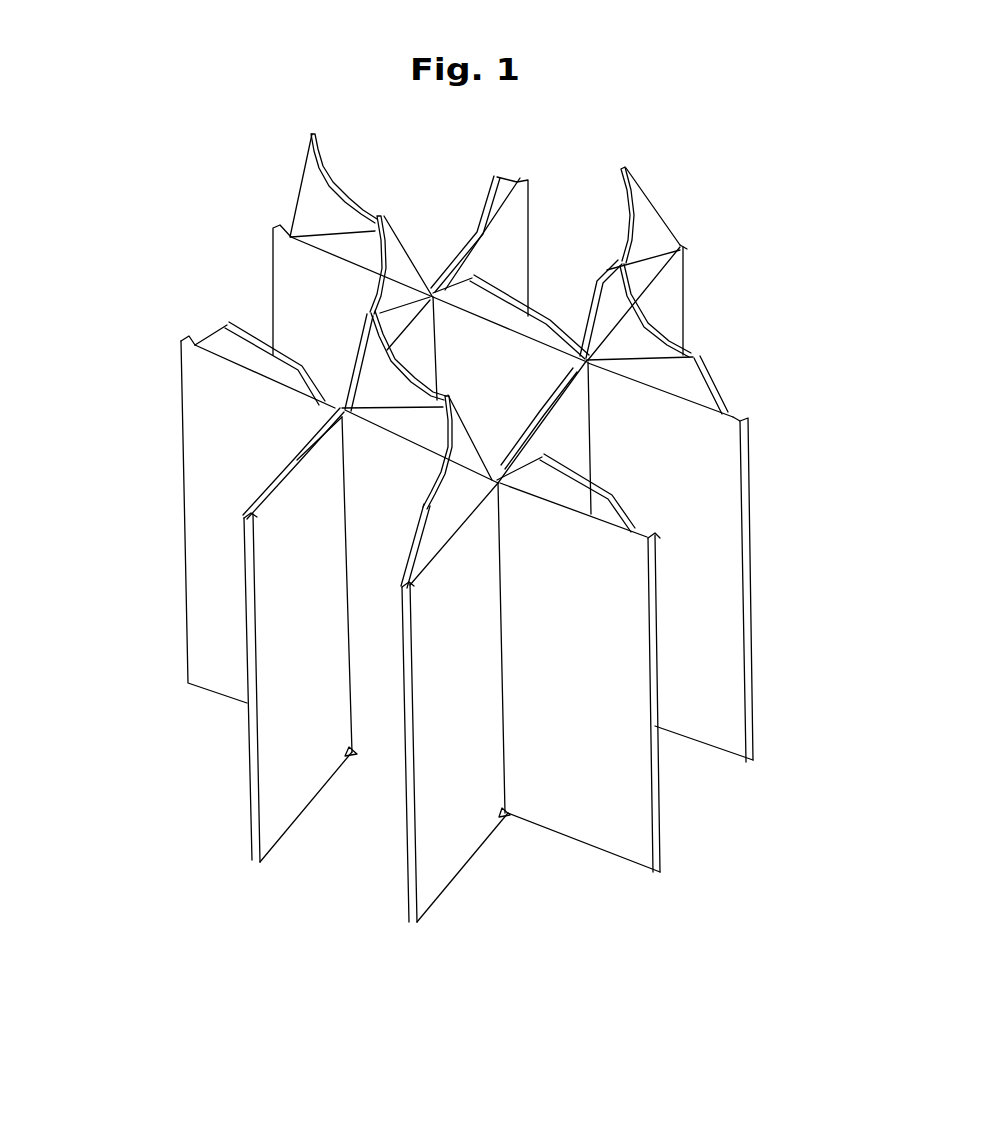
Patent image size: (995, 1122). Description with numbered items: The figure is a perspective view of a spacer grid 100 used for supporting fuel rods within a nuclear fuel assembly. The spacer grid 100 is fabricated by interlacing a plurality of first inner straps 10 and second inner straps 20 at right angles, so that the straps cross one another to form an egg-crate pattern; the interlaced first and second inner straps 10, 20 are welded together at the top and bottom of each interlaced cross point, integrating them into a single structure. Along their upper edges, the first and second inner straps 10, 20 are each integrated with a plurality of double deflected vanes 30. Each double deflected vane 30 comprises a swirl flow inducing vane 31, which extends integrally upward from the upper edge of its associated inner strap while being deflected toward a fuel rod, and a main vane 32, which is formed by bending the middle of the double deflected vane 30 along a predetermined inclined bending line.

The spacer grid 100 is at (151, 236).
The first inner strap 10 is at (757, 518).
The second inner strap 20 is at (247, 845).
The double deflected vane 30 is at (793, 263).
The swirl flow inducing vane 31 is at (697, 388).
The main vane 32 is at (640, 337).